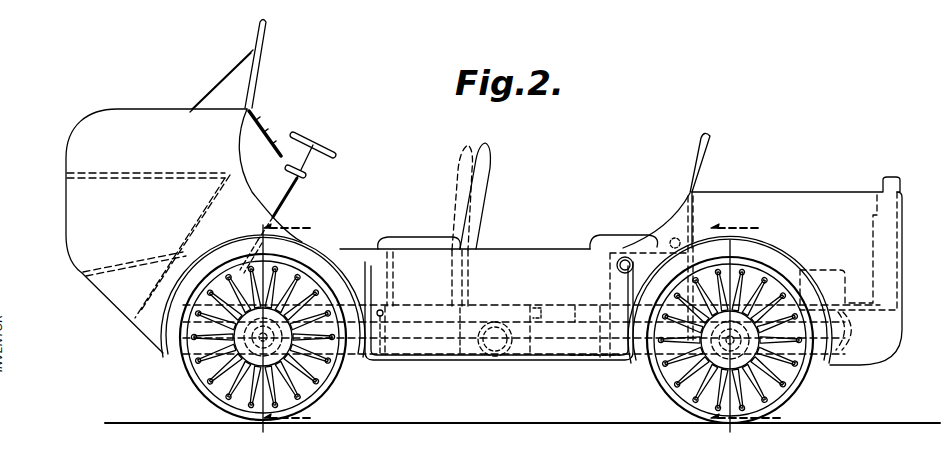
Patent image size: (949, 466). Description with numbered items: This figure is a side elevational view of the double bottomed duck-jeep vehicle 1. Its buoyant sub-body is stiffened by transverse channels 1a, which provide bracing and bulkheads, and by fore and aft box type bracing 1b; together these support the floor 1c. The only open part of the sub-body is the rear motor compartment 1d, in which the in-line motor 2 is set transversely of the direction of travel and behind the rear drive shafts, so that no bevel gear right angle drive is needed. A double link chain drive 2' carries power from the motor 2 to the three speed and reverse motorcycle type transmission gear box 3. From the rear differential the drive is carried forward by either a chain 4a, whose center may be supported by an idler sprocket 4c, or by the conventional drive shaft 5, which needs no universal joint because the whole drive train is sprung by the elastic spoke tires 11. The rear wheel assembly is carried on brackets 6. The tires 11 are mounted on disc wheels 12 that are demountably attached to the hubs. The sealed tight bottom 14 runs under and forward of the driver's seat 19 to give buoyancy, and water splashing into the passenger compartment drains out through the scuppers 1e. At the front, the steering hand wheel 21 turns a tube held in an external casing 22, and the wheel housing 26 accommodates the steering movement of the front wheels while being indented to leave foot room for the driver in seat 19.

The duck-jeep vehicle 1 is at (98, 130).
The transverse channels 1a is at (116, 178).
The fore and aft box type bracing 1b is at (510, 313).
The floor 1c is at (477, 307).
The rear motor compartment 1d is at (832, 205).
The scuppers 1e is at (381, 317).
The in-line motor 2 is at (848, 251).
The double link chain drive 2' is at (855, 331).
The transmission gear box 3 is at (293, 326).
The chain 4a is at (582, 322).
The idler sprocket 4c is at (483, 350).
The drive shaft 5 is at (462, 345).
The wheel assembly brackets 6 is at (751, 326).
The elastic spoke tires 11 is at (195, 372).
The disc wheels 12 is at (247, 354).
The sealed tight bottom 14 is at (592, 363).
The driver's seat 19 is at (410, 243).
The steering hand wheel 21 is at (311, 141).
The external casing 22 is at (310, 170).
The wheel housing 26 is at (258, 220).